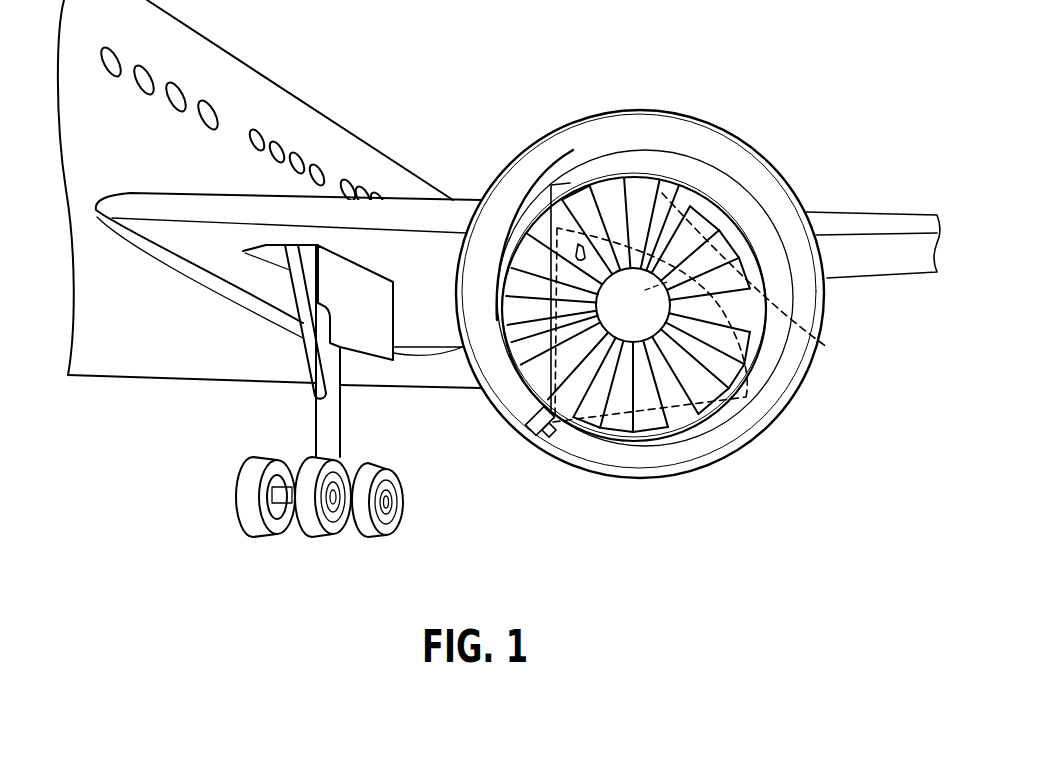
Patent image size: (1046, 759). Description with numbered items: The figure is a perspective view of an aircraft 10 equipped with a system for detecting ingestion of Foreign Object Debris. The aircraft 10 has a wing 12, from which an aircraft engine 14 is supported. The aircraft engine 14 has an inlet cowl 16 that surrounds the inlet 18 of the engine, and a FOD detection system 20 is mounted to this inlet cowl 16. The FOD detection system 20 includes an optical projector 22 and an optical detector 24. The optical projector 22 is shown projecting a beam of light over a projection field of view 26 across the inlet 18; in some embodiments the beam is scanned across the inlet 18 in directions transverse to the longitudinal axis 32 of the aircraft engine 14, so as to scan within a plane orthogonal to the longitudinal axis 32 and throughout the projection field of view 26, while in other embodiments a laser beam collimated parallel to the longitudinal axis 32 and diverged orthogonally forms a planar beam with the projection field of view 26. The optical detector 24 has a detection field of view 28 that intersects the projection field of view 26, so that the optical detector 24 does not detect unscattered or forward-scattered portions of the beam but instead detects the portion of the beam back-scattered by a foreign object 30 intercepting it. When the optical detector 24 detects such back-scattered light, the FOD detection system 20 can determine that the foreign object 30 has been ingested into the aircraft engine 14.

The aircraft 10 is at (350, 87).
The wing 12 is at (426, 280).
The aircraft engine 14 is at (800, 180).
The inlet cowl 16 is at (656, 145).
The inlet 18 is at (800, 273).
The FOD detection system 20 is at (537, 444).
The optical projector 22 is at (533, 418).
The optical detector 24 is at (552, 428).
The projection field of view 26 is at (570, 184).
The detection field of view 28 is at (746, 397).
The foreign object 30 is at (596, 235).
The longitudinal axis 32 is at (827, 347).